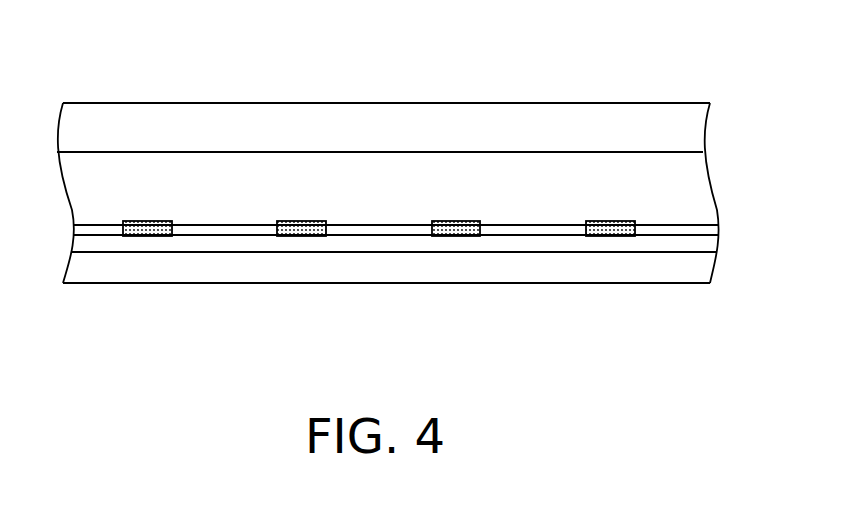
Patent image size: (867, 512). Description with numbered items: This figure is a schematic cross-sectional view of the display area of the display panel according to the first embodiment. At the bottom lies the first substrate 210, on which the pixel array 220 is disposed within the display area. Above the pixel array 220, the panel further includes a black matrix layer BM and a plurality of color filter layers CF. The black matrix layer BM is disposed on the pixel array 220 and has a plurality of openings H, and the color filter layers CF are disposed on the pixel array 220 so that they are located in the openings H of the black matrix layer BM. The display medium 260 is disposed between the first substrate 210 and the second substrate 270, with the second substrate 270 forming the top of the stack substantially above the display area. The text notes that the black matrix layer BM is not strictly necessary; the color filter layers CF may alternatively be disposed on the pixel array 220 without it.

The first substrate 210 is at (308, 263).
The pixel array 220 is at (222, 243).
The display medium 260 is at (425, 195).
The second substrate 270 is at (163, 117).
The black matrix layer BM is at (608, 236).
The color filter layers CF is at (663, 235).
The openings H is at (370, 224).